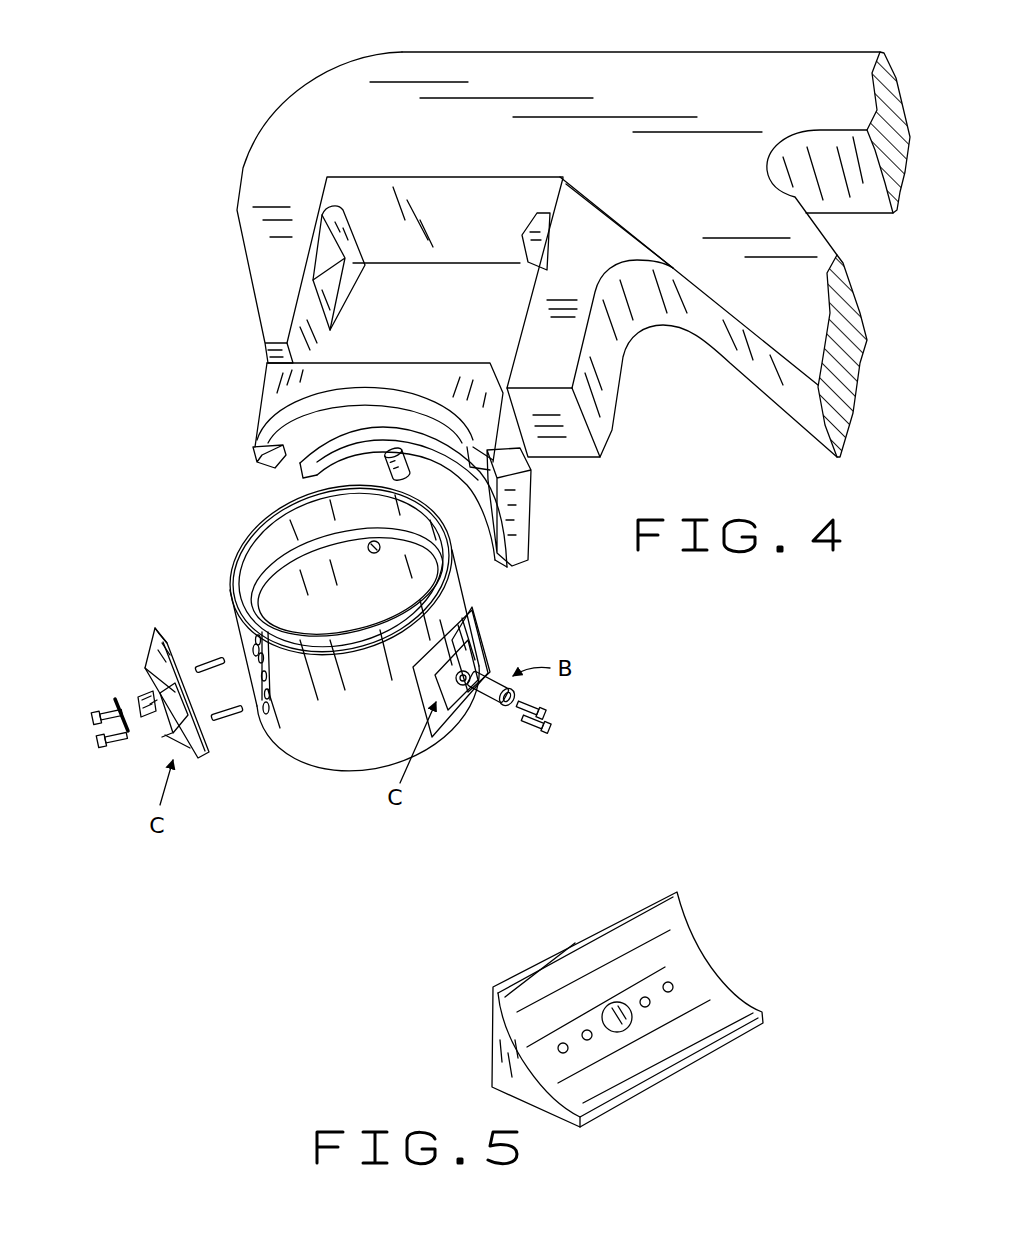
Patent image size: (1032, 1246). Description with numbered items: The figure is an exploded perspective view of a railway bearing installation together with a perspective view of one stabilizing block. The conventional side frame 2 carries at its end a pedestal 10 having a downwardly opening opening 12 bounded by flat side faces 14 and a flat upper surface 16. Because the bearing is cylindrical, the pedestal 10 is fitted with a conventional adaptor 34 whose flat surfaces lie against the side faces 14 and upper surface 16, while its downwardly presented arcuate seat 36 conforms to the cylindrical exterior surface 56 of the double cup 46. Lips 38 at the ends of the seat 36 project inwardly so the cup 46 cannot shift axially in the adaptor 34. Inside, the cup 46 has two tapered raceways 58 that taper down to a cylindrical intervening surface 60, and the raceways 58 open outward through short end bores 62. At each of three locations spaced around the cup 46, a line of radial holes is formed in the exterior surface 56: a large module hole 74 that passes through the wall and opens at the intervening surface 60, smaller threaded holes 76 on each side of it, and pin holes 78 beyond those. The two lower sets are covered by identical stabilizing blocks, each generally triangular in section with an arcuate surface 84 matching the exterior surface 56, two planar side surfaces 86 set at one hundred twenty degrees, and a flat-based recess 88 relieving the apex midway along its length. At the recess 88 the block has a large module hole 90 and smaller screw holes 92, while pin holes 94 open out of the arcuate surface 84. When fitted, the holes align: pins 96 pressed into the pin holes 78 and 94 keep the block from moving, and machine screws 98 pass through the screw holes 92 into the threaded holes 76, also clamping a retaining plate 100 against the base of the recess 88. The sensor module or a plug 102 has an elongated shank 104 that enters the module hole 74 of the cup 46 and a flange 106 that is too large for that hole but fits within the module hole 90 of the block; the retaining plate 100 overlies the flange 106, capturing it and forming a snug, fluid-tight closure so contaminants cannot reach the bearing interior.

In FIG. 4, the side frame 2 is at (760, 363).
In FIG. 4, the pedestal 10 is at (533, 233).
In FIG. 4, the opening 12 is at (477, 309).
In FIG. 4, the side faces 14 is at (300, 313).
In FIG. 4, the upper surface 16 is at (468, 203).
In FIG. 4, the adaptor 34 is at (520, 490).
In FIG. 4, the arcuate seat 36 is at (383, 418).
In FIG. 4, the lips 38 is at (268, 452).
In FIG. 4, the cup 46 is at (307, 745).
In FIG. 4, the exterior surface 56 is at (362, 730).
In FIG. 4, the tapered raceways 58 is at (310, 526).
In FIG. 4, the cylindrical intervening surface 60 is at (320, 563).
In FIG. 4, the end bores 62 is at (243, 568).
In FIG. 4, the module hole 74 is at (373, 550).
In FIG. 4, the threaded holes 76 is at (268, 680).
In FIG. 4, the pin holes 78 is at (253, 650).
In FIG. 4, the arcuate surface 84 is at (160, 628).
In FIG. 5, the arcuate surface 84 is at (647, 1047).
In FIG. 4, the planar side surfaces 86 is at (182, 743).
In FIG. 5, the planar side surfaces 86 is at (487, 1063).
In FIG. 4, the recess 88 is at (173, 747).
In FIG. 4, the module hole 90 is at (457, 678).
In FIG. 5, the module hole 90 is at (603, 1006).
In FIG. 5, the screw holes 92 is at (643, 997).
In FIG. 5, the pin holes 94 is at (667, 982).
In FIG. 4, the pins 96 is at (188, 620).
In FIG. 4, the machine screws 98 is at (93, 716).
In FIG. 4, the retaining plate 100 is at (118, 697).
In FIG. 4, the plug 102 is at (393, 475).
In FIG. 4, the shank 104 is at (167, 733).
In FIG. 4, the flange 106 is at (153, 720).